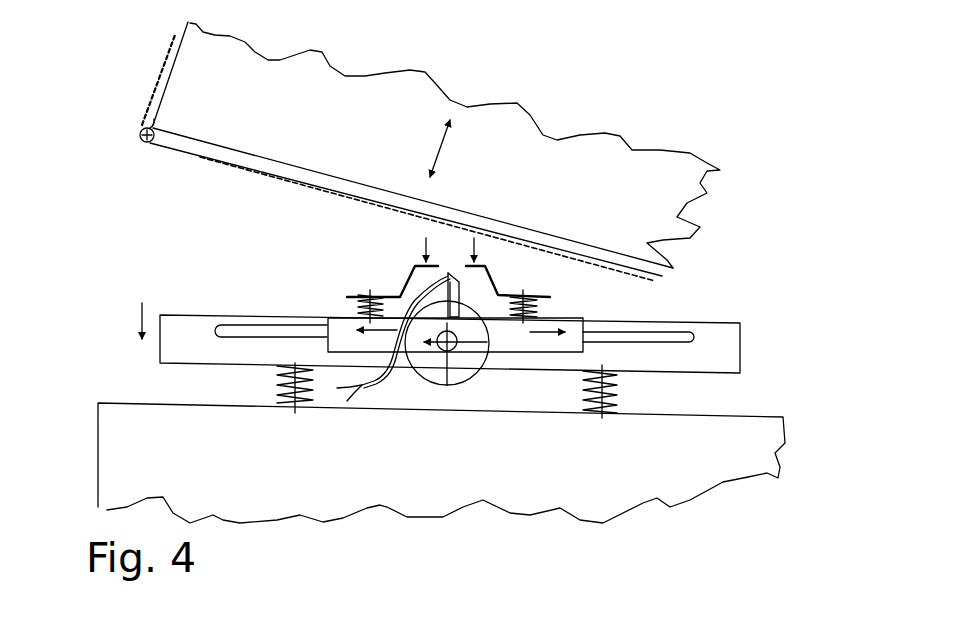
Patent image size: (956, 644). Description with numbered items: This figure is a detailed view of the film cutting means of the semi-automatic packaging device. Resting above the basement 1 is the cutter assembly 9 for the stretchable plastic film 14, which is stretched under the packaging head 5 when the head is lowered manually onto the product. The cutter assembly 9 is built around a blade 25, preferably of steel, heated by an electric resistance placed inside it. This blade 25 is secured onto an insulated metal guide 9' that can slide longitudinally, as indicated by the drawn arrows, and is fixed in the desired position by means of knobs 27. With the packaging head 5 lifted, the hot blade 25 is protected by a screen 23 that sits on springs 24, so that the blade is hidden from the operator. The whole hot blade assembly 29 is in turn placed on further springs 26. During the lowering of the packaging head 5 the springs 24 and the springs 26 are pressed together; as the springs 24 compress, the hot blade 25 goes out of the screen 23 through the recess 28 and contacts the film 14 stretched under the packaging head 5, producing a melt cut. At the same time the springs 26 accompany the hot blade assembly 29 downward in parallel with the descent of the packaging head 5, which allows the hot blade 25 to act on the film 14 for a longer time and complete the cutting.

The basement 1 is at (163, 437).
The packaging head 5 is at (532, 147).
The cutter assembly 9 is at (189, 278).
The insulated metal guide 9' is at (403, 300).
The plastic film 14 is at (188, 154).
The screen 23 is at (400, 291).
The springs 24 is at (522, 311).
The blade 25 is at (455, 298).
The springs 26 is at (602, 389).
The knobs 27 is at (458, 373).
The recess 28 is at (452, 265).
The hot blade assembly 29 is at (703, 355).